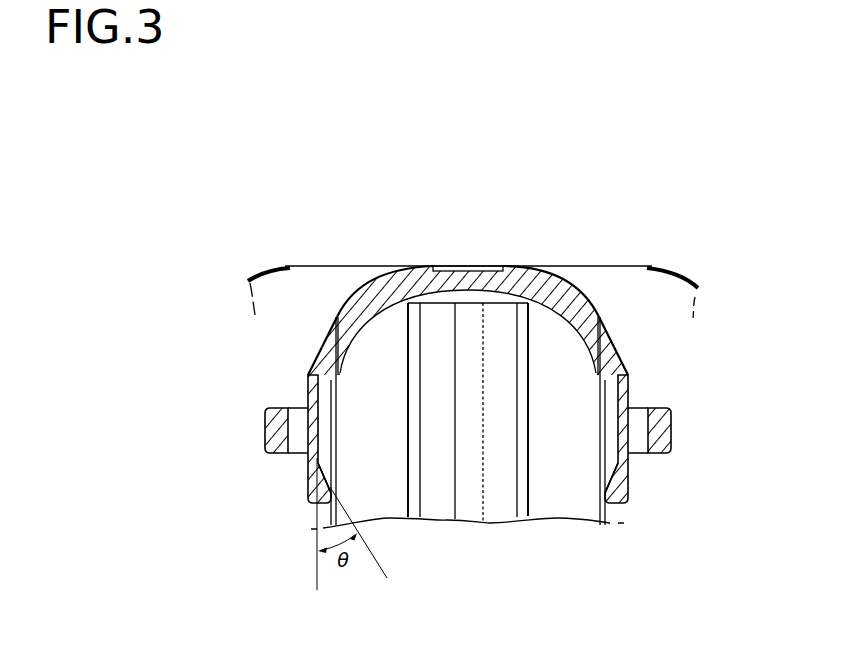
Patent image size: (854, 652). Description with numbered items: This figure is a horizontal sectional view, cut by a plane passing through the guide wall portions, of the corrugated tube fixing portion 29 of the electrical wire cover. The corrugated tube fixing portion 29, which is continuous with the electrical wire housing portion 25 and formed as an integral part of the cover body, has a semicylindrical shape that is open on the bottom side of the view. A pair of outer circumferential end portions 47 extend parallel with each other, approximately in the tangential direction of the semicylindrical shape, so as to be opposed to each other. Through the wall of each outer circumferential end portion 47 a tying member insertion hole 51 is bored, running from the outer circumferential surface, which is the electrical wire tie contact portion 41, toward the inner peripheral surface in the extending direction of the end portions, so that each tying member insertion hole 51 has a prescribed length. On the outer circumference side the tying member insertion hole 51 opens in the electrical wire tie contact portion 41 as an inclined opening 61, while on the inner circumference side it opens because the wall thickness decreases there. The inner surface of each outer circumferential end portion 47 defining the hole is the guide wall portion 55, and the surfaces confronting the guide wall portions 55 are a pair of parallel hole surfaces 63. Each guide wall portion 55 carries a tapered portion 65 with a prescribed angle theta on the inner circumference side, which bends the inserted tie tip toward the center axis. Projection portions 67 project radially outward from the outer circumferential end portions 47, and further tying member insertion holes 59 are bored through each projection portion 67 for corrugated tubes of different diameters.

The electrical wire housing portion 25 is at (697, 262).
The corrugated tube fixing portion 29 is at (585, 285).
The electrical wire tie contact portion 41 is at (417, 265).
The outer circumferential end portion 47 is at (307, 392).
The tying member insertion hole 51 is at (313, 316).
The guide wall portion 55 is at (318, 423).
The tying member insertion hole 59 is at (296, 449).
The inclined opening 61 is at (323, 334).
The parallel hole surface 63 is at (323, 357).
The tapered portion 65 is at (325, 477).
The projection portion 67 is at (265, 427).